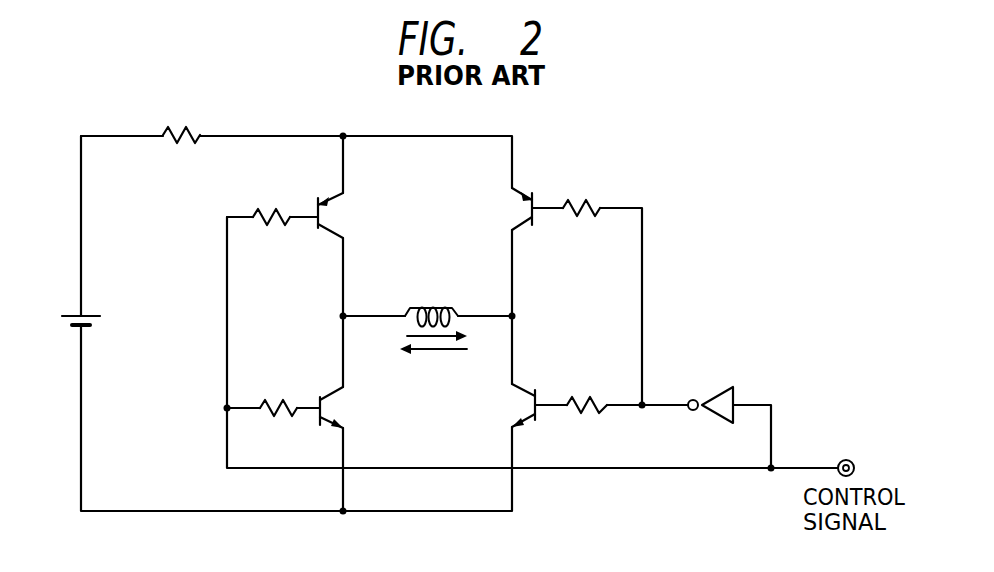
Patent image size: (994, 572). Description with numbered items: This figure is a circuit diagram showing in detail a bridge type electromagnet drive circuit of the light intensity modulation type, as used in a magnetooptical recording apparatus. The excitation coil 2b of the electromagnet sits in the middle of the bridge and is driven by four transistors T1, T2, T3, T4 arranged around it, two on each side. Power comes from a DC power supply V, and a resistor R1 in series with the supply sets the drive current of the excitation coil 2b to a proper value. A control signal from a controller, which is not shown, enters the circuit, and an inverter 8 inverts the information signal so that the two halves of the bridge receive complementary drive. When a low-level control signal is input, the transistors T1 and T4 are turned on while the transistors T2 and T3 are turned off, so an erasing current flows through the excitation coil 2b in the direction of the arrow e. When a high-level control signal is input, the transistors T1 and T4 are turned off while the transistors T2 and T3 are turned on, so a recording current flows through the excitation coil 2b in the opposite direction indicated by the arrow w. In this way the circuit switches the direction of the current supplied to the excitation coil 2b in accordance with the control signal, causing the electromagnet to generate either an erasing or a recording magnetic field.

The resistor R1 is at (181, 122).
The DC power supply V is at (92, 326).
The transistor T1 is at (309, 215).
The transistor T2 is at (544, 209).
The transistor T3 is at (313, 407).
The transistor T4 is at (551, 405).
The excitation coil 2b is at (434, 306).
The arrow e is at (445, 336).
The arrow w is at (423, 350).
The inverter 8 is at (725, 388).